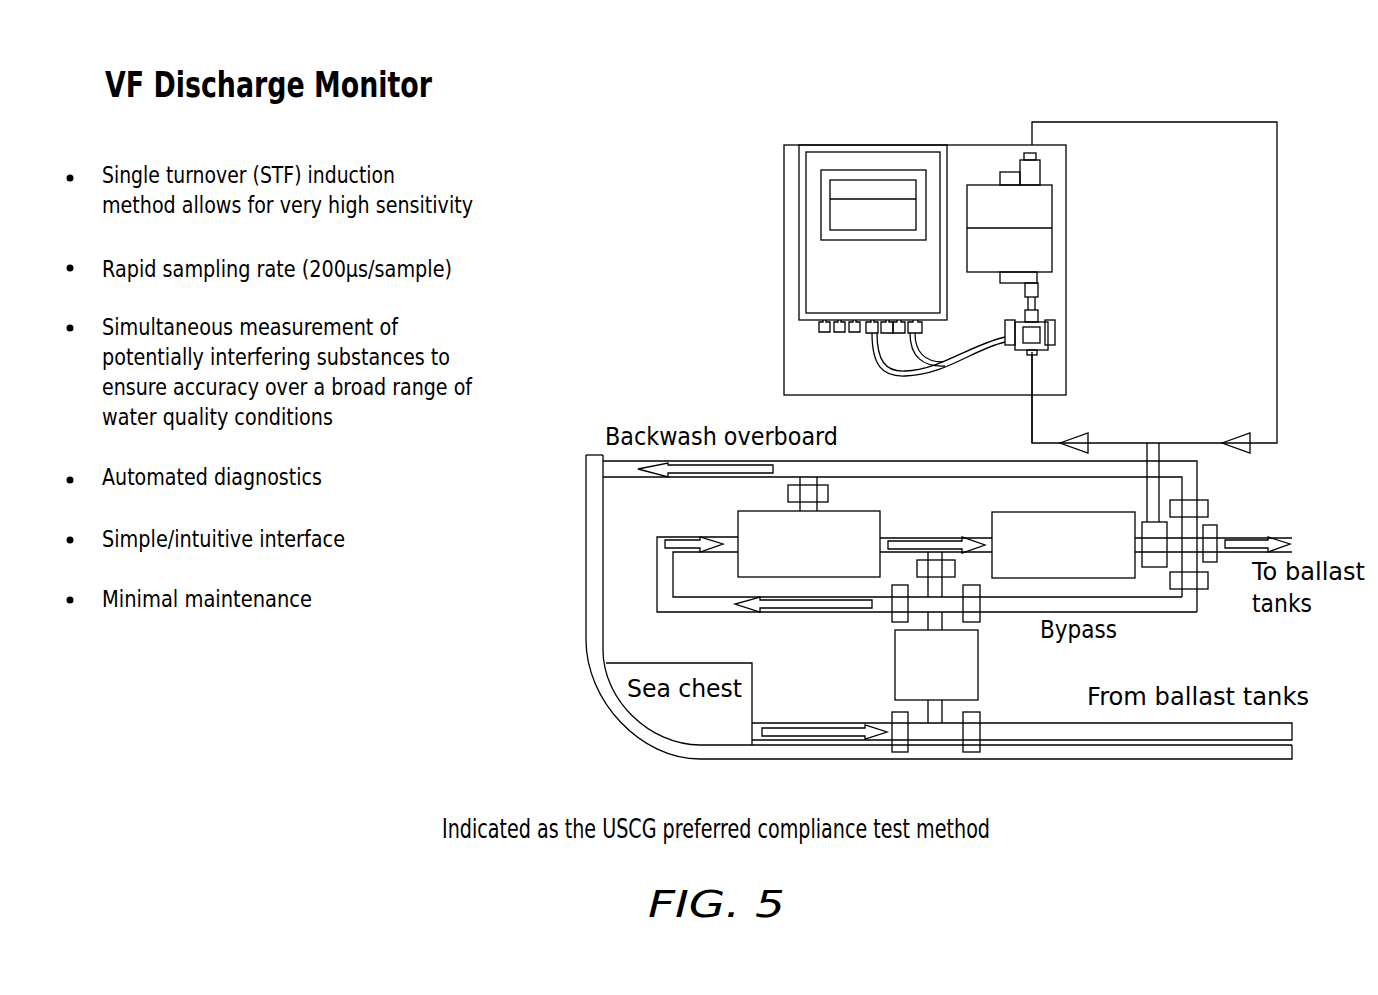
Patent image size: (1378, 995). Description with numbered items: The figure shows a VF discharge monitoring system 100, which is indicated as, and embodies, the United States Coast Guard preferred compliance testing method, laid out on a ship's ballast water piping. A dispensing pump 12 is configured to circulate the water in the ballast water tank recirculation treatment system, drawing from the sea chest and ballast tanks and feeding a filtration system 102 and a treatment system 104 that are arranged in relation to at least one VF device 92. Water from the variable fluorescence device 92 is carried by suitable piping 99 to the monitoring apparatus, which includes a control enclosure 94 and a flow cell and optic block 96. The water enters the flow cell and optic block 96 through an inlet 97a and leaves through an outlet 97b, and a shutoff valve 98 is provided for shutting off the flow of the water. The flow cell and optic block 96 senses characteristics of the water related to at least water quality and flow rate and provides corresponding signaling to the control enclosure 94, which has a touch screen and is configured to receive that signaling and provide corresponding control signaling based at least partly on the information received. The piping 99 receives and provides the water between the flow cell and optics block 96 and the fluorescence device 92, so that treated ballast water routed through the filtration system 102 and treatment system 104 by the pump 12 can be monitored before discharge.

The VF discharge monitoring system 100 is at (824, 87).
The control enclosure 94 is at (925, 187).
The flow cell and optic block 96 is at (1053, 208).
The inlet 97a is at (1033, 352).
The outlet 97b is at (1040, 155).
The shutoff valve 98 is at (1055, 337).
The piping 99 is at (1278, 355).
The filtration system 102 is at (857, 510).
The treatment system 104 is at (1013, 511).
The dispensing pump 12 is at (978, 662).
The variable fluorescence device 92 is at (1153, 567).